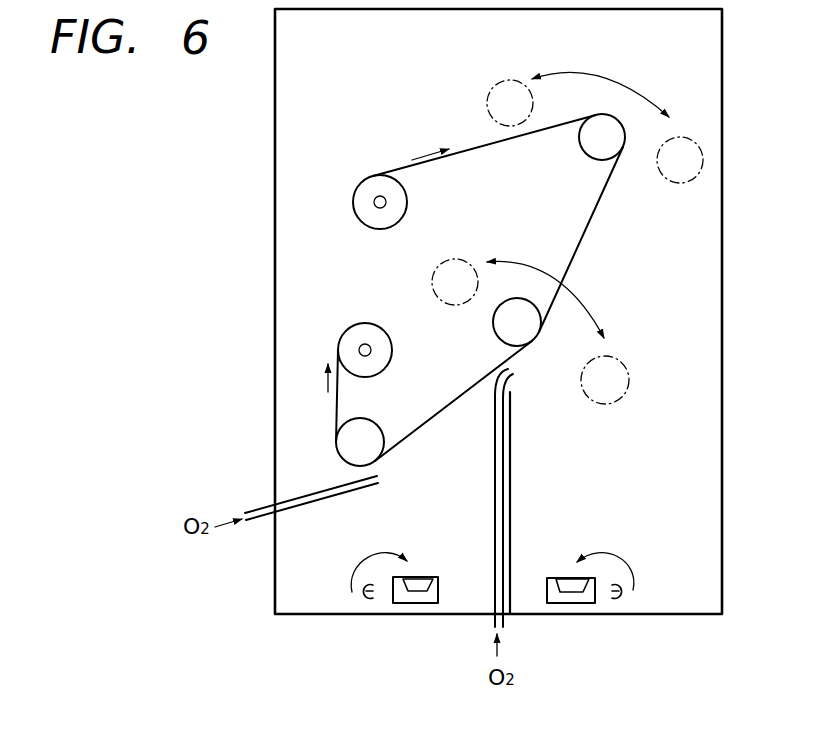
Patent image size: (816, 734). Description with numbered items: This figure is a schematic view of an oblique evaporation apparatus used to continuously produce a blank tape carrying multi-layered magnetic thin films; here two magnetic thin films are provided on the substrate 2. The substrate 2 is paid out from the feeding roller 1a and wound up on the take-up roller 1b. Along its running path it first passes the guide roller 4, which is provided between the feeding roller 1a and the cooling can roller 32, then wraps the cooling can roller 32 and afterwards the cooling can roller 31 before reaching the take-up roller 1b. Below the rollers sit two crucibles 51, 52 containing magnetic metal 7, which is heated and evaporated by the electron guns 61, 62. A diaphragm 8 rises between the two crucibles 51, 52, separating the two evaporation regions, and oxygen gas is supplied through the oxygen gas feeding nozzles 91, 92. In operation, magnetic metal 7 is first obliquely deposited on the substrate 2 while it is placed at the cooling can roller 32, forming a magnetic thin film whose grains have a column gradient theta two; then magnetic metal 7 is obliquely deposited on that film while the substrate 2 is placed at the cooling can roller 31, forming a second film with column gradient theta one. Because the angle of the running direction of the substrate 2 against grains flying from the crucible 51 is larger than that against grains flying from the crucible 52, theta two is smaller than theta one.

The feeding roller 1a is at (366, 178).
The take-up roller 1b is at (350, 342).
The substrate 2 is at (477, 143).
The cooling can roller 31 is at (342, 442).
The cooling can roller 32 is at (454, 259).
The guide roller 4 is at (507, 81).
The crucible 51 is at (439, 590).
The crucible 52 is at (587, 605).
The electron gun 61 is at (368, 604).
The electron gun 62 is at (633, 597).
The magnetic metal 7 is at (419, 576).
The diaphragm 8 is at (511, 507).
The oxygen gas feeding nozzle 91 is at (314, 503).
The oxygen gas feeding nozzle 92 is at (494, 467).